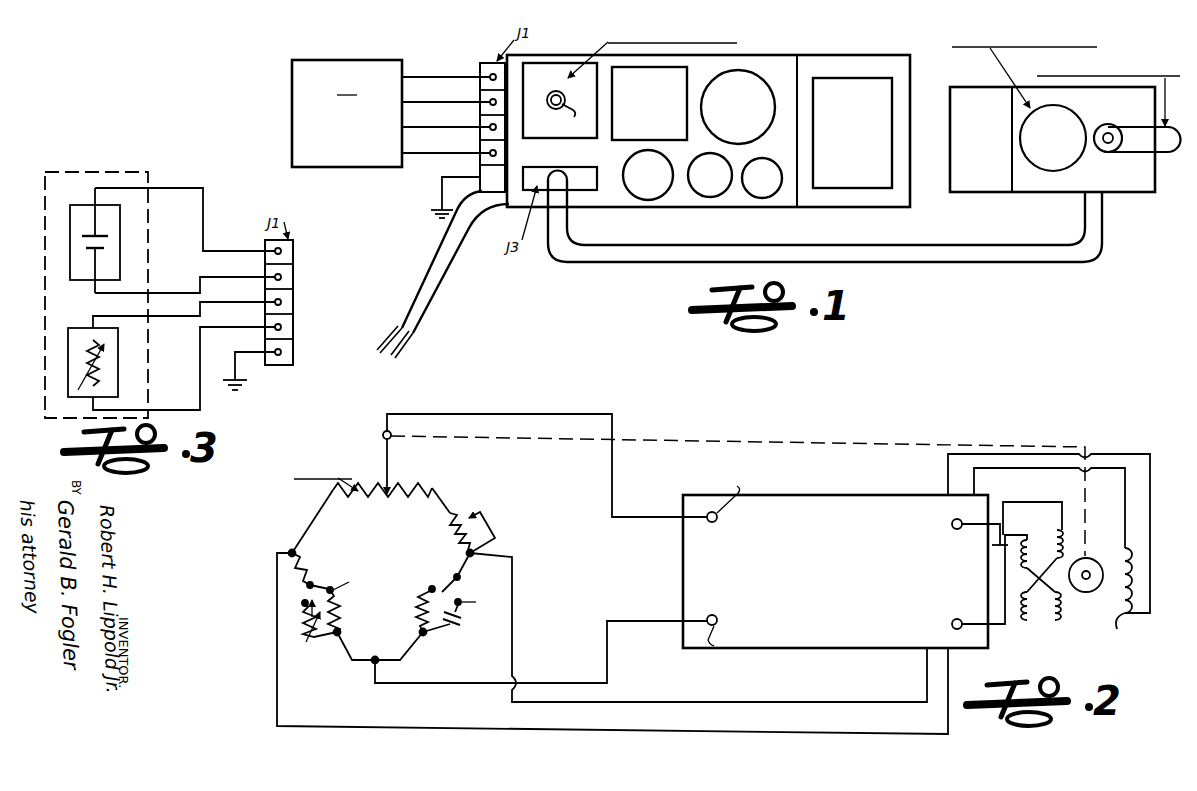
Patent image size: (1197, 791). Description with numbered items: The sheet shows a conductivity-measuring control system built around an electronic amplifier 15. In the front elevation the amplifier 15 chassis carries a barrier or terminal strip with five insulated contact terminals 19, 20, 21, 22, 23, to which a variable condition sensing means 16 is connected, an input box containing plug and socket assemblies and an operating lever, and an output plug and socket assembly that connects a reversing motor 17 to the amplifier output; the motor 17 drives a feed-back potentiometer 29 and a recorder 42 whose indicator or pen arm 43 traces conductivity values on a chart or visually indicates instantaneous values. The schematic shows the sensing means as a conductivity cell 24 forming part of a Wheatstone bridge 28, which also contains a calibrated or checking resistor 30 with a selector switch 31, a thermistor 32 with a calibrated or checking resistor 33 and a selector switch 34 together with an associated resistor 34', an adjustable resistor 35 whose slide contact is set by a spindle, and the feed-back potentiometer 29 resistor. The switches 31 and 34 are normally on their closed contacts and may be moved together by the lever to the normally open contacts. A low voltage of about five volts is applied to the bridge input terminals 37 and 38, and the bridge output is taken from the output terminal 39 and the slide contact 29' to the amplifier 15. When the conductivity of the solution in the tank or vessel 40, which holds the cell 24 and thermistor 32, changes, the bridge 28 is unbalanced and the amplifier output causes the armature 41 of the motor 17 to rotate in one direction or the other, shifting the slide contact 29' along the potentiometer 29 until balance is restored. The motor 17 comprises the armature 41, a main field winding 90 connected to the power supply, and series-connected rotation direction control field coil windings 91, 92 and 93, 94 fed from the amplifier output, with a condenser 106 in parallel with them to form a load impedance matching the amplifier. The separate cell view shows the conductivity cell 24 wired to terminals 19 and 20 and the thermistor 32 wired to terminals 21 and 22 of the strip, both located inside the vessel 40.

In FIG. 1, the amplifier 15 is at (773, 53).
In FIG. 2, the amplifier 15 is at (823, 541).
In FIG. 1, the sensing means 16 is at (347, 113).
In FIG. 1, the reversing motor 17 is at (981, 90).
In FIG. 2, the reversing motor 17 is at (1092, 623).
In FIG. 1, the contact terminal 19 is at (478, 81).
In FIG. 3, the contact terminal 19 is at (296, 253).
In FIG. 1, the contact terminal 20 is at (478, 106).
In FIG. 3, the contact terminal 20 is at (296, 278).
In FIG. 1, the contact terminal 21 is at (478, 133).
In FIG. 3, the contact terminal 21 is at (296, 303).
In FIG. 1, the contact terminal 22 is at (478, 157).
In FIG. 3, the contact terminal 22 is at (296, 328).
In FIG. 1, the contact terminal 23 is at (478, 180).
In FIG. 3, the contact terminal 23 is at (296, 353).
In FIG. 3, the conductivity cell 24 is at (108, 240).
In FIG. 2, the conductivity cell 24 is at (458, 620).
In FIG. 2, the Wheatstone bridge 28 is at (397, 566).
In FIG. 1, the feed-back potentiometer 29 is at (1024, 100).
In FIG. 2, the feed-back potentiometer 29 is at (354, 473).
In FIG. 2, the slide contact 29' is at (414, 462).
In FIG. 2, the calibrated or checking resistor 30 is at (418, 605).
In FIG. 2, the selector switch 31 is at (460, 590).
In FIG. 3, the thermistor 32 is at (80, 363).
In FIG. 2, the thermistor 32 is at (311, 626).
In FIG. 2, the calibrated or checking resistor 33 is at (341, 610).
In FIG. 2, the selector switch 34 is at (327, 590).
In FIG. 2, the resistor 34' is at (315, 563).
In FIG. 2, the adjustable resistor 35 is at (450, 532).
In FIG. 2, the input terminal 37 is at (289, 551).
In FIG. 2, the input terminal 38 is at (474, 553).
In FIG. 2, the bridge output terminal 39 is at (372, 662).
In FIG. 3, the tank or vessel 40 is at (122, 170).
In FIG. 2, the armature 41 is at (1089, 560).
In FIG. 1, the recorder 42 is at (1118, 113).
In FIG. 1, the indicator or pen arm 43 is at (1142, 152).
In FIG. 2, the main field winding 90 is at (1049, 547).
In FIG. 2, the rotation direction control field coil winding 91 is at (1027, 540).
In FIG. 2, the rotation direction control field coil winding 92 is at (1055, 620).
In FIG. 2, the rotation direction control field coil winding 93 is at (1057, 530).
In FIG. 2, the rotation direction control field coil winding 94 is at (1027, 620).
In FIG. 2, the condenser 106 is at (992, 547).